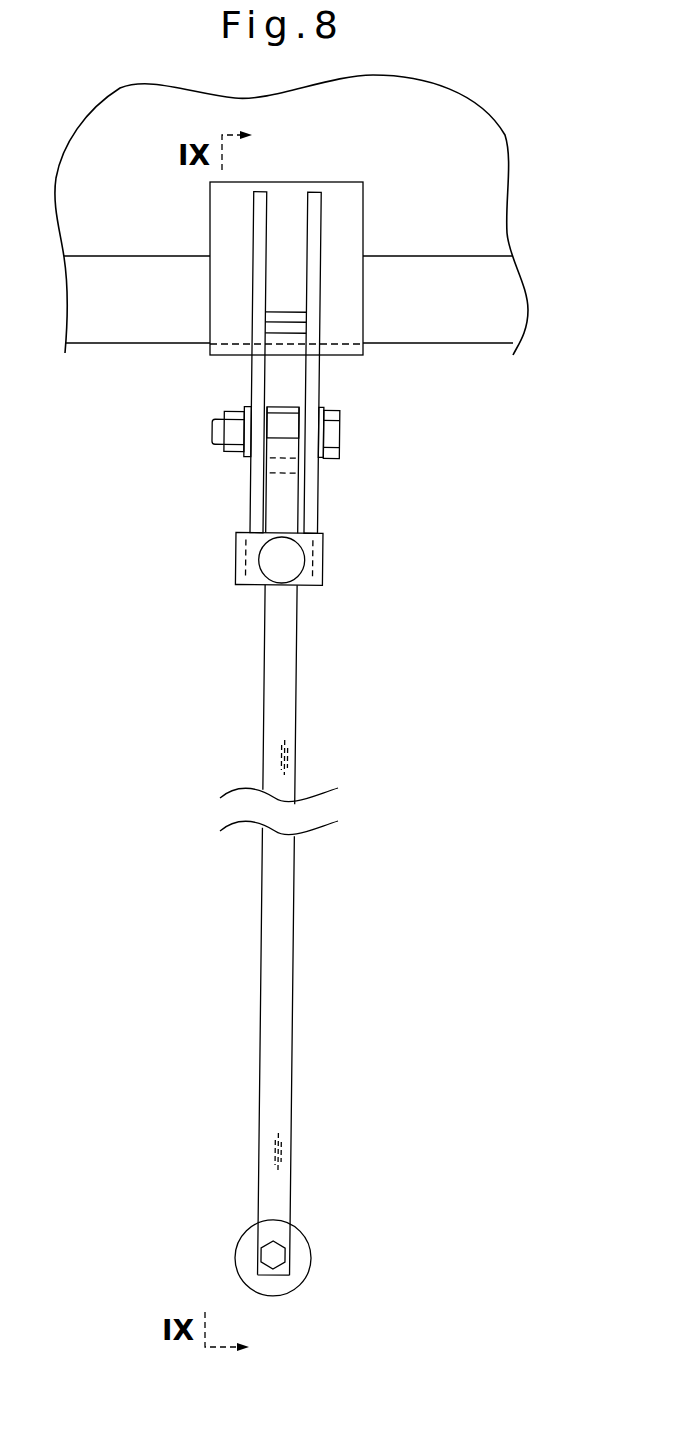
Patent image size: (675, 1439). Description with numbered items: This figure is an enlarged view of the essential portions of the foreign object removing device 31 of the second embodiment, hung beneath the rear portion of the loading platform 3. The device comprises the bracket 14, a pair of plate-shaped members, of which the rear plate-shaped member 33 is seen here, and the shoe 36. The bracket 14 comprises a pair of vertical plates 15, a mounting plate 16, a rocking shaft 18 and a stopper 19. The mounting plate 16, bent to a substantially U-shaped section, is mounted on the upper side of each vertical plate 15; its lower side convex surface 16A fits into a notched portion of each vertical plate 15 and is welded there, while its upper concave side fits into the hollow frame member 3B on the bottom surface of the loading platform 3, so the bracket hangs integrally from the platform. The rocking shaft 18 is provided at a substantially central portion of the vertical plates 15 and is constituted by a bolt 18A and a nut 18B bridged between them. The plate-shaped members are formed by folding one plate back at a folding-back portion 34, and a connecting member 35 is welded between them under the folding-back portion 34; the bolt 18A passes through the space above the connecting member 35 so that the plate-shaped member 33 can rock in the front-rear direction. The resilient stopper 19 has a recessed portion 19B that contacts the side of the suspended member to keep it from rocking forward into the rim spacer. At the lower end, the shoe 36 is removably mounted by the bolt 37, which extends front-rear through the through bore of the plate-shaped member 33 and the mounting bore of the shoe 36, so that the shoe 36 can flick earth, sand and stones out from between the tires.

The loading platform 3 is at (477, 177).
The hollow frame member 3B is at (480, 273).
The bracket 14 is at (283, 377).
The vertical plate 15 is at (253, 507).
The mounting plate 16 is at (220, 352).
The lower side convex surface 16A is at (330, 350).
The rocking shaft 18 is at (269, 458).
The bolt 18A is at (330, 453).
The nut 18B is at (233, 452).
The stopper 19 is at (261, 572).
The recessed portion 19B is at (257, 562).
The foreign object removing device 31 is at (304, 852).
The plate-shaped member 33 is at (289, 666).
The folding-back portion 34 is at (283, 402).
The connecting member 35 is at (260, 467).
The shoe 36 is at (300, 1260).
The bolt 37 is at (267, 1257).